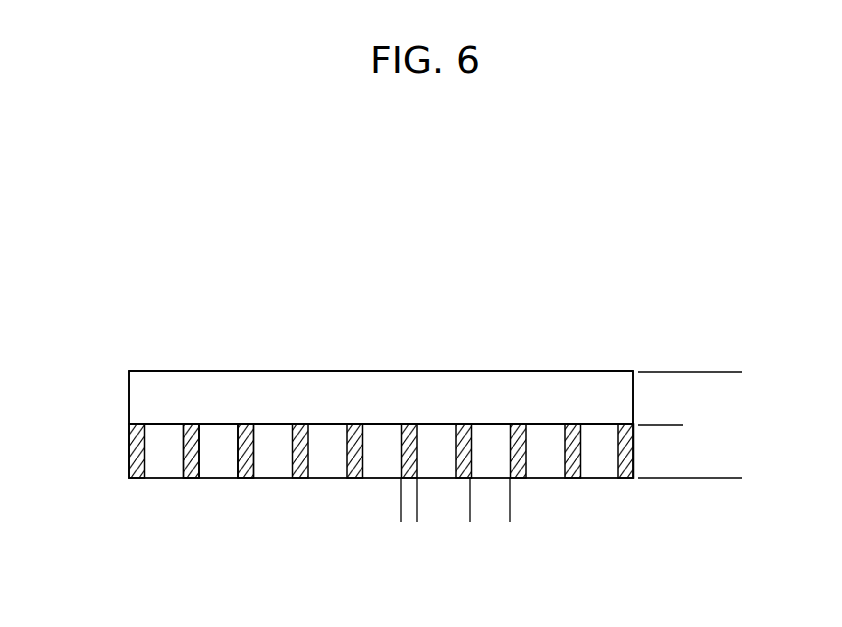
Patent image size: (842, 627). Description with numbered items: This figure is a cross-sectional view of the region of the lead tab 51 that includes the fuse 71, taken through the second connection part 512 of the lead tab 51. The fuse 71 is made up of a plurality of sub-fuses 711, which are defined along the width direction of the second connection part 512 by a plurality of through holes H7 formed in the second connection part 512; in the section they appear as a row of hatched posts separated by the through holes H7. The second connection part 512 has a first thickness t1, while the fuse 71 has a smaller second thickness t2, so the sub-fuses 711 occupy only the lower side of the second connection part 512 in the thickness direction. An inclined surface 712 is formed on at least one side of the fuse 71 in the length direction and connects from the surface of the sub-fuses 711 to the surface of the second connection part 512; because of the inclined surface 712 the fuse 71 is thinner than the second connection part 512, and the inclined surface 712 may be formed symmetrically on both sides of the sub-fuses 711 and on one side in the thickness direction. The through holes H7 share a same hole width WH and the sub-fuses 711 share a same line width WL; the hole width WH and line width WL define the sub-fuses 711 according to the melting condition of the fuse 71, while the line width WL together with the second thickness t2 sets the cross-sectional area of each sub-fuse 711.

The fuse 71 is at (120, 448).
The sub-fuses 711 is at (245, 424).
The inclined surface 712 is at (331, 388).
The second connection part 512 is at (540, 371).
The lead tab 51 is at (381, 333).
The through holes H7 is at (276, 456).
The line width WL is at (437, 514).
The hole width WH is at (510, 514).
The first thickness t1 is at (735, 372).
The second thickness t2 is at (675, 425).